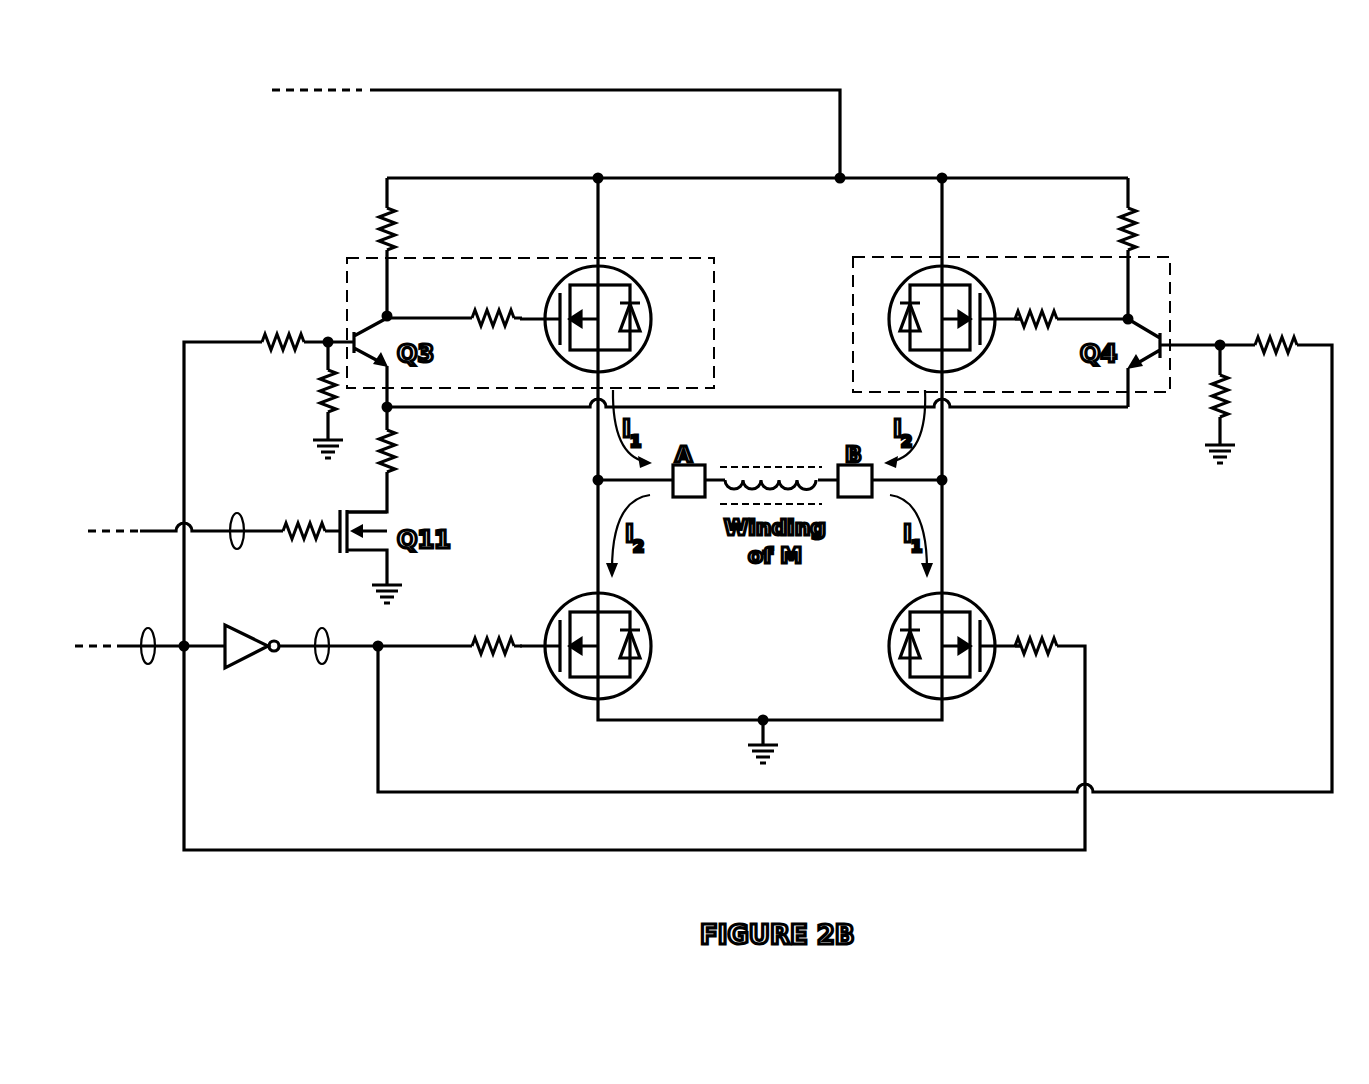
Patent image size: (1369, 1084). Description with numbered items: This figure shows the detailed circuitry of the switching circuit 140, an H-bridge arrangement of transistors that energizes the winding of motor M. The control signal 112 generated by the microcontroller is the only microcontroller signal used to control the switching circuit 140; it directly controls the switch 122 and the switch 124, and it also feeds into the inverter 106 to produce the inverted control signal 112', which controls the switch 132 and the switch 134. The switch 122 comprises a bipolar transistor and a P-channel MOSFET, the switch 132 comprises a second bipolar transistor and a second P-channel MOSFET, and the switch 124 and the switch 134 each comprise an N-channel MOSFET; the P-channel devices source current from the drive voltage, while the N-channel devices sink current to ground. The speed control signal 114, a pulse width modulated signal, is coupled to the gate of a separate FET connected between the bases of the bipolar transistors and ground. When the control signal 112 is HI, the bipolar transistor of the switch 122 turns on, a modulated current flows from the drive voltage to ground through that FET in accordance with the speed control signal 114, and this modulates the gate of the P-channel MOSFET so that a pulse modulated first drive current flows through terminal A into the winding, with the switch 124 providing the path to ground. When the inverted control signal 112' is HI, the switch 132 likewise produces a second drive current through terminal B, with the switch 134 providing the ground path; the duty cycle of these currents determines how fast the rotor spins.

The inverter 106 is at (240, 668).
The control signal 112 is at (150, 622).
The inverted control signal 112' is at (315, 625).
The speed control signal 114 is at (237, 513).
The switch 122 is at (714, 290).
The switch 124 is at (958, 594).
The switch 132 is at (853, 290).
The switch 134 is at (652, 630).
The switching circuit 140 is at (1168, 152).